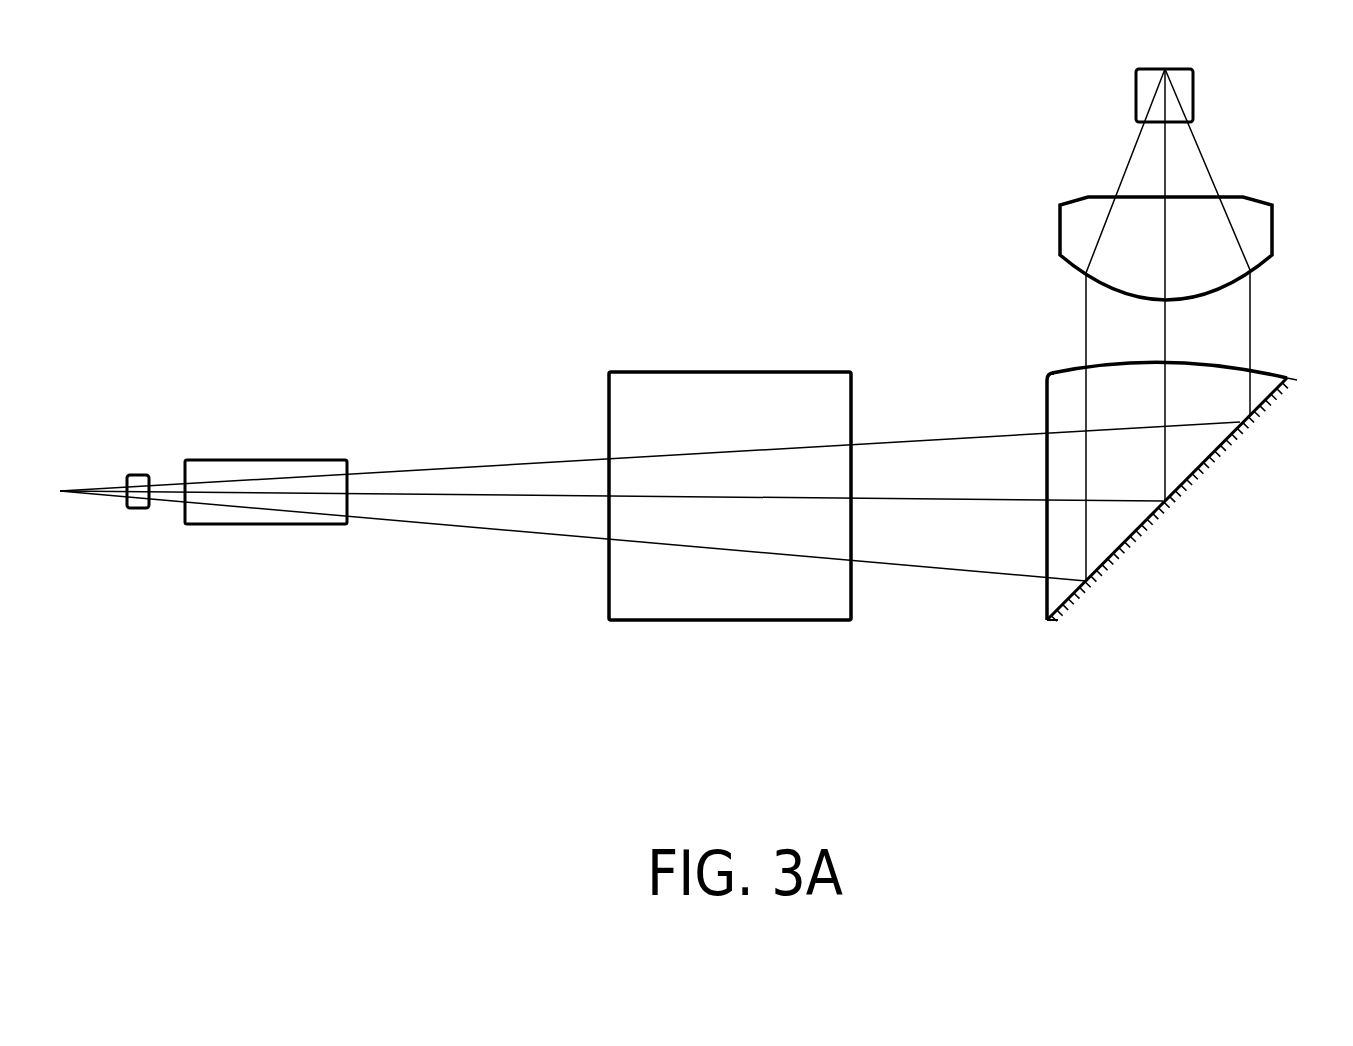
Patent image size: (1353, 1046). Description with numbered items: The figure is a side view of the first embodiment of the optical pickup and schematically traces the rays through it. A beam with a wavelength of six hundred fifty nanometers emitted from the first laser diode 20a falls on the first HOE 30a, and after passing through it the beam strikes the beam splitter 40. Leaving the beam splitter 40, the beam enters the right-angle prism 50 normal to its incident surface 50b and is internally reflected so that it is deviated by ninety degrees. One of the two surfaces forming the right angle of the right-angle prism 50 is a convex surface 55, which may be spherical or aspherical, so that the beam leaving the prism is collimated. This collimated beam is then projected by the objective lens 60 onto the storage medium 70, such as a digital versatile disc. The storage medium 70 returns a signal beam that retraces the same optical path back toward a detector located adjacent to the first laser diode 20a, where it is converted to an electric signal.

The first laser diode 20a is at (139, 475).
The first HOE 30a is at (267, 460).
The beam splitter 40 is at (732, 372).
The right-angle prism 50 is at (1140, 450).
The incident surface 50b is at (1047, 403).
The convex surface 55 is at (1115, 363).
The objective lens 60 is at (1070, 230).
The storage medium 70 is at (1145, 82).